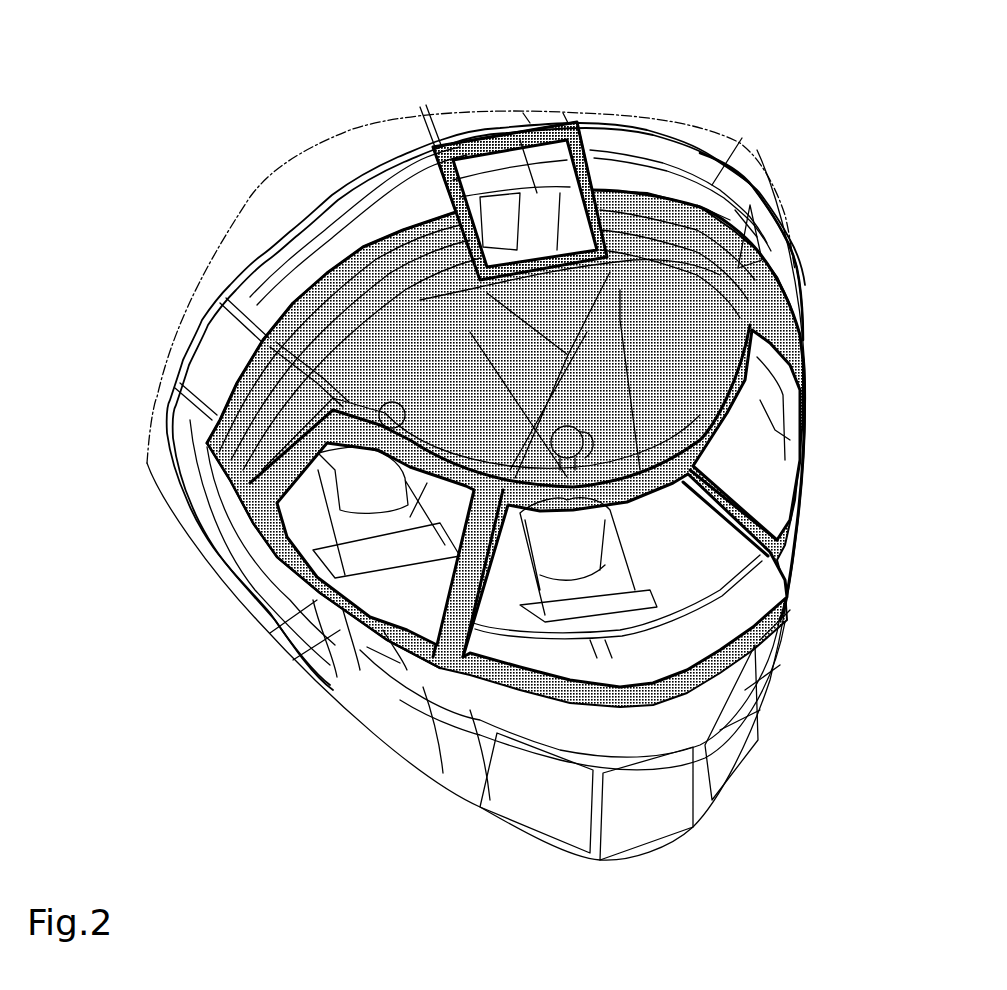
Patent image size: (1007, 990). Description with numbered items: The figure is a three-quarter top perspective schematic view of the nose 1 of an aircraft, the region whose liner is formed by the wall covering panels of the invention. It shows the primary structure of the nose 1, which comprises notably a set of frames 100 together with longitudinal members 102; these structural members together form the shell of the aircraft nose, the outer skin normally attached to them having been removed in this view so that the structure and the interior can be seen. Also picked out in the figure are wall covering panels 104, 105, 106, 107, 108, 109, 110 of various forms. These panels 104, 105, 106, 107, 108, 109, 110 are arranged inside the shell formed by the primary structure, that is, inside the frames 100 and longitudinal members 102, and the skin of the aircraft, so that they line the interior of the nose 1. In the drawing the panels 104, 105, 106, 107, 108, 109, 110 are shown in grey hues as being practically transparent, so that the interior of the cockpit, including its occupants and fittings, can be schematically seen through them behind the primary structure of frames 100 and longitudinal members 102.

The nose 1 is at (161, 107).
The frames 100 is at (530, 451).
The longitudinal members 102 is at (437, 110).
The wall covering panel 104 is at (593, 167).
The wall covering panel 105 is at (315, 598).
The wall covering panel 106 is at (470, 703).
The wall covering panel 107 is at (788, 558).
The wall covering panel 108 is at (368, 312).
The wall covering panel 109 is at (563, 310).
The wall covering panel 110 is at (672, 297).